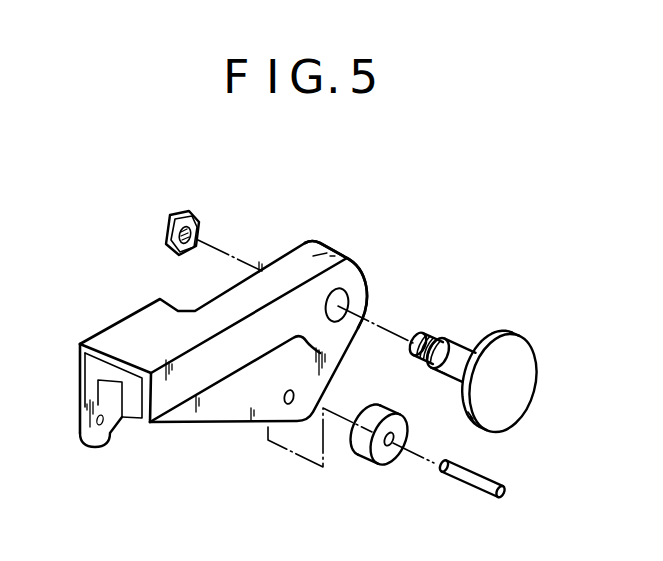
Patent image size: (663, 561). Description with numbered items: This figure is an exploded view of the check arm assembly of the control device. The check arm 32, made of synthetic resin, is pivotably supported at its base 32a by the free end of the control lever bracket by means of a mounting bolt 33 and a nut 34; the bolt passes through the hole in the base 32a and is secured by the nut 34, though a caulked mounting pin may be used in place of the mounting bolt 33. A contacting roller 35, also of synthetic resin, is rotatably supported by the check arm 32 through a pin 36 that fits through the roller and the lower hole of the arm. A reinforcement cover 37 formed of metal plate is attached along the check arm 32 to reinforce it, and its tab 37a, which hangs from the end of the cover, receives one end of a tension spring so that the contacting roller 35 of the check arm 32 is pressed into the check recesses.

The check arm 32 is at (201, 423).
The base 32a is at (315, 252).
The mounting bolt 33 is at (498, 333).
The nut 34 is at (181, 214).
The contacting roller 35 is at (356, 456).
The pin 36 is at (463, 482).
The reinforcement cover 37 is at (127, 337).
The tab 37a is at (98, 436).